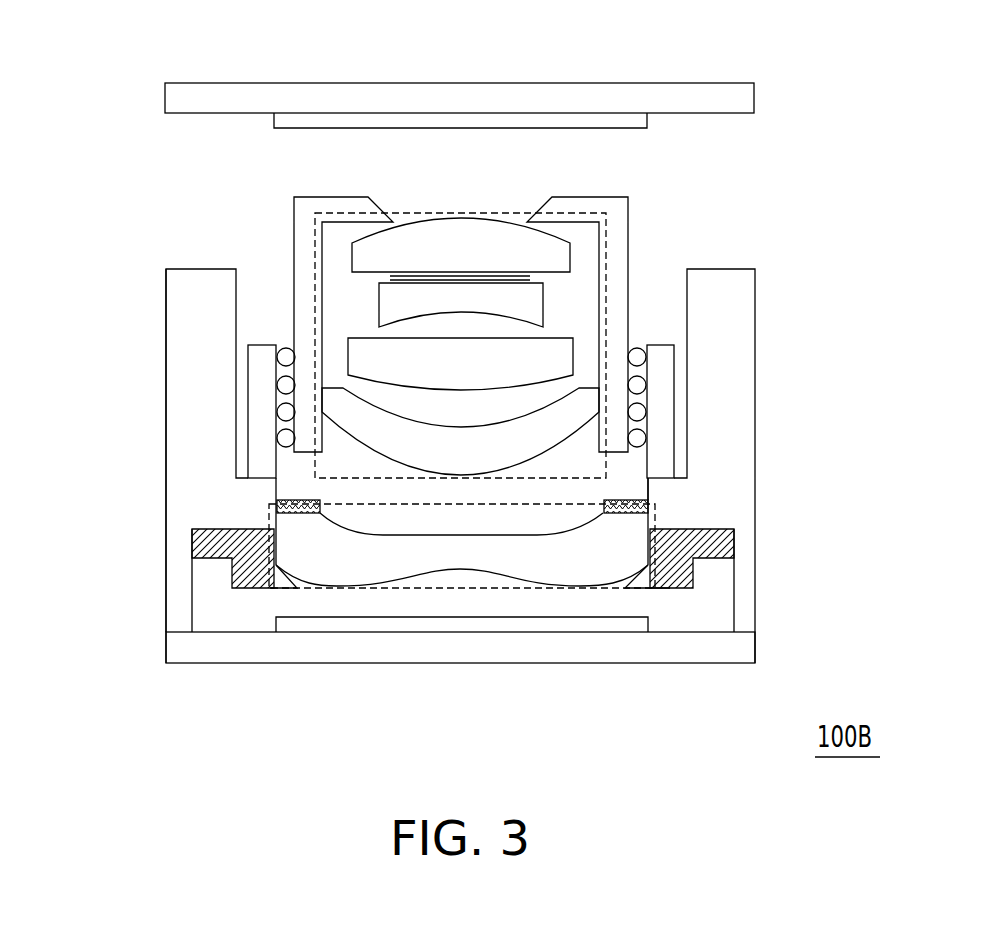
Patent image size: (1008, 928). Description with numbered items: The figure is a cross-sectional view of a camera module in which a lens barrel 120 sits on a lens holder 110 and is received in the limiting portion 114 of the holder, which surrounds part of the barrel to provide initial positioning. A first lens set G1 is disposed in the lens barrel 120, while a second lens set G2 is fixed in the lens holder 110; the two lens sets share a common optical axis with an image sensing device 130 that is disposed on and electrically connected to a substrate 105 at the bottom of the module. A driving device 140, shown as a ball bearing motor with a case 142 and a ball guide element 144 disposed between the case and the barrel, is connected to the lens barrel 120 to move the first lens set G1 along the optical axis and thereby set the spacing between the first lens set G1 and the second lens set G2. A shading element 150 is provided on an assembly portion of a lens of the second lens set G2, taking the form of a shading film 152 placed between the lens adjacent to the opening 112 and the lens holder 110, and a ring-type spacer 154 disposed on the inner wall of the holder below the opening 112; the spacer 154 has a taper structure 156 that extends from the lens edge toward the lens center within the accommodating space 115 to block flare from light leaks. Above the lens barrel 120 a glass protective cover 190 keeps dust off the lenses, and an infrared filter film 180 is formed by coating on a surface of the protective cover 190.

The substrate 105 is at (738, 647).
The lens holder 110 is at (461, 465).
The opening 112 is at (638, 495).
The limiting portion 114 is at (728, 320).
The accommodating space 115 is at (203, 573).
The lens barrel 120 is at (617, 228).
The image sensing device 130 is at (470, 625).
The driving device 140 is at (564, 409).
The case 142 is at (662, 398).
The ball guide element 144 is at (640, 356).
The shading element 150 is at (95, 482).
The shading film 152 is at (280, 494).
The spacer 154 is at (212, 546).
The taper structure 156 is at (282, 590).
The infrared filter film 180 is at (552, 118).
The protective cover 190 is at (737, 100).
The first lens set G1 is at (414, 213).
The second lens set G2 is at (655, 547).